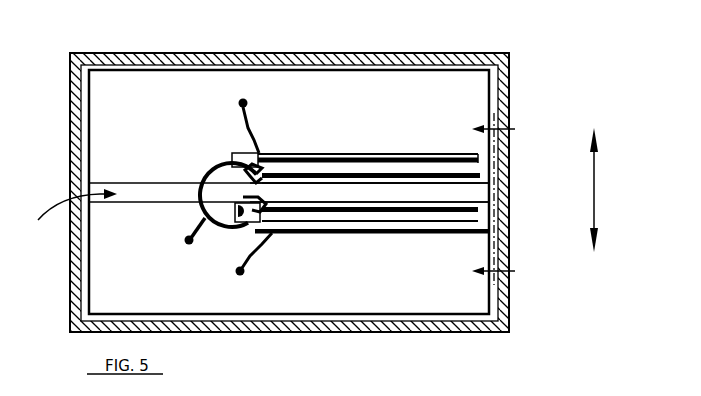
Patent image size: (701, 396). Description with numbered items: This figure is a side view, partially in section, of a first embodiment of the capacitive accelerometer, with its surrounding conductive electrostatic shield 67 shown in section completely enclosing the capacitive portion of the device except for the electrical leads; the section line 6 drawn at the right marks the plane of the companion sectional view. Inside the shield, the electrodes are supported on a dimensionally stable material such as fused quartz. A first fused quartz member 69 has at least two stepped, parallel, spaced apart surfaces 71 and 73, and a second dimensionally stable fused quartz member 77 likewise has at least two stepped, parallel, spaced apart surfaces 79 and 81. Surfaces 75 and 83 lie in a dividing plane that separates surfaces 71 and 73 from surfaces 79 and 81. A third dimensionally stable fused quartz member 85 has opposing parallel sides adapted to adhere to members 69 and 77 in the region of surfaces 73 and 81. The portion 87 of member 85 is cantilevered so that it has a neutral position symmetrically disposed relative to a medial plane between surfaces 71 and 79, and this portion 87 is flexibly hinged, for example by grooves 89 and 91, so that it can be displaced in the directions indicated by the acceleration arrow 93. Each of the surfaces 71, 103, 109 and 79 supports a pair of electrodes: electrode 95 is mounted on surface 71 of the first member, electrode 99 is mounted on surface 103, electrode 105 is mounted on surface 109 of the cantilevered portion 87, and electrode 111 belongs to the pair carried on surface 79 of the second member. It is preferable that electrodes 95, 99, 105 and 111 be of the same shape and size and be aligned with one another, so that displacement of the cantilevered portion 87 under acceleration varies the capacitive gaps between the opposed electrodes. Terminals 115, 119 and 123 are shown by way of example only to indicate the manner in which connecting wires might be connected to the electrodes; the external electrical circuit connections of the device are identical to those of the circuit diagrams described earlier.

The section line 6- 6 is at (456, 140).
The conductive electrostatic shield 67 is at (503, 300).
The first fused quartz member 69 is at (396, 98).
The surface 71 is at (304, 152).
The surface 73 is at (131, 183).
The surface 75 is at (233, 153).
The second fused quartz member 77 is at (407, 280).
The surface 79 is at (369, 228).
The surface 81 is at (138, 203).
The surface 83 is at (223, 229).
The third fused quartz member 85 is at (66, 211).
The cantilevered portion 87 is at (490, 193).
The groove 89 is at (219, 167).
The groove 91 is at (247, 198).
The acceleration arrow 93 is at (593, 190).
The electrode 95 is at (344, 154).
The electrode 99 is at (425, 180).
The surface 103 is at (368, 182).
The electrode 105 is at (422, 205).
The surface 109 is at (303, 212).
The electrode 111 is at (447, 230).
The terminal 115 is at (248, 116).
The terminal 119 is at (184, 237).
The terminal 123 is at (270, 248).